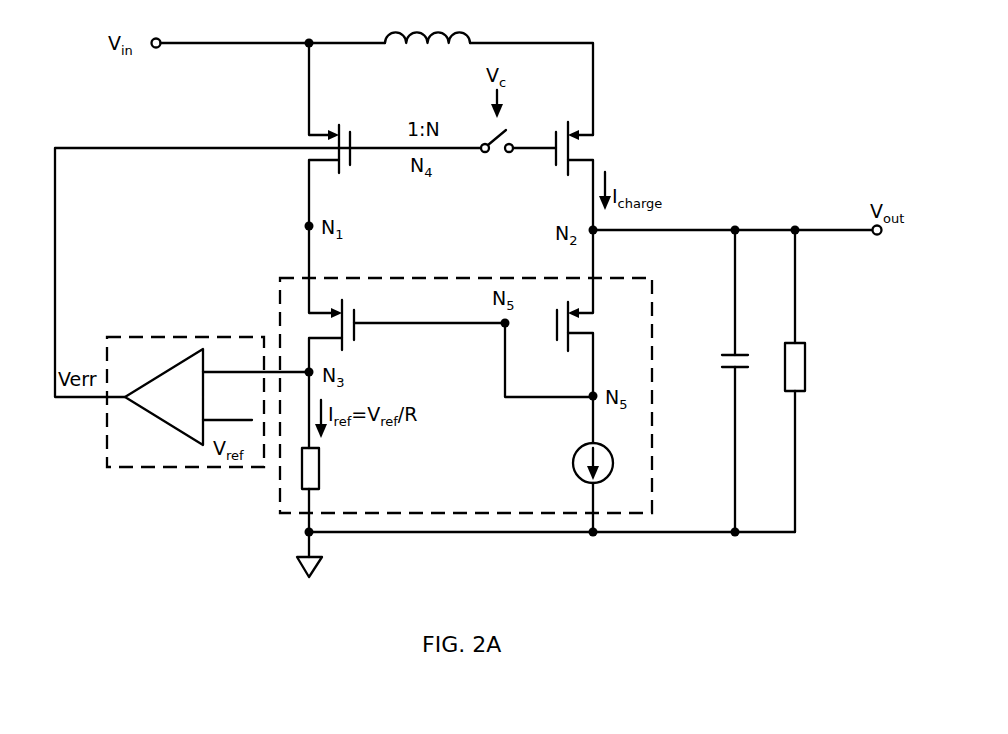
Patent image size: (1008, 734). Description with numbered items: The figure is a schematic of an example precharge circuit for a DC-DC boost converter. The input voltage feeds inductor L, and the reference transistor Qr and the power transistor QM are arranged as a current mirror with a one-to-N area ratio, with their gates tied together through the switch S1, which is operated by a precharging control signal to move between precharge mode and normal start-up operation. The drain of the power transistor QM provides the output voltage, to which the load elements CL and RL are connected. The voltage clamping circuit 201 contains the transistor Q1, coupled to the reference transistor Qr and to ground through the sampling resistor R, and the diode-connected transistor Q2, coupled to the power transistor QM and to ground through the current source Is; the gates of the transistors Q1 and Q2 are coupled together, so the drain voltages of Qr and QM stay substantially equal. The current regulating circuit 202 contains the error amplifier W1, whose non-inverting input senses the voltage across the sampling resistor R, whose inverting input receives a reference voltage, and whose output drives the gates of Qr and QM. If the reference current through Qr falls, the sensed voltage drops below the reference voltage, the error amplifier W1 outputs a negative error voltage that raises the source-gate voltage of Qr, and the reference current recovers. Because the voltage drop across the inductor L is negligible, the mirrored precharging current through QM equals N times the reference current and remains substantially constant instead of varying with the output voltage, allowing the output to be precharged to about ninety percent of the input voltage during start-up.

The voltage clamping circuit 201 is at (466, 395).
The current regulating circuit 202 is at (185, 402).
The inductor L is at (427, 24).
The reference transistor Qr is at (357, 146).
The power transistor QM is at (597, 148).
The transistor Q1 is at (361, 325).
The transistor Q2 is at (591, 326).
The switch S1 is at (497, 160).
The current source Is is at (601, 463).
The sampling resistor R is at (319, 468).
The load capacitor CL is at (719, 363).
The load resistor RL is at (809, 367).
The error amplifier W1 is at (164, 397).